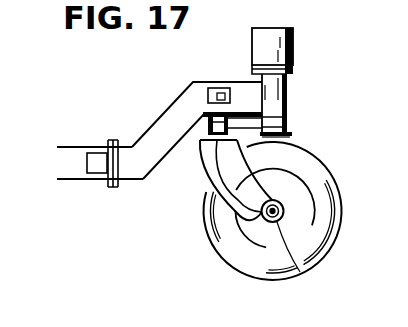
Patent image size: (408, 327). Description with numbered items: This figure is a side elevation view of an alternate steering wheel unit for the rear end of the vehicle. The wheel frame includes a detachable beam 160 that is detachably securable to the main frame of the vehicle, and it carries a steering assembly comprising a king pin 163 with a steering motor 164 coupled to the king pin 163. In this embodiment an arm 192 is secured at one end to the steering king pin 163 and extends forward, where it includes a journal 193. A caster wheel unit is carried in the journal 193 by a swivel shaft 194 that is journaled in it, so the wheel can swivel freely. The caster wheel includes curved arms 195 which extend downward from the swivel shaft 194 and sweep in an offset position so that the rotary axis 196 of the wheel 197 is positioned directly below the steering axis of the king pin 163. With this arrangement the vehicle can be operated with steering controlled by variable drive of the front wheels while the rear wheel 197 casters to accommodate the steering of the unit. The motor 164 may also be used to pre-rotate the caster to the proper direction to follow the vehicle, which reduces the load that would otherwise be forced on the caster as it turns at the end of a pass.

The detachable beam 160 is at (160, 132).
The journal 193 is at (203, 117).
The steering motor 164 is at (285, 30).
The king pin 163 is at (287, 86).
The arm 192 is at (285, 130).
The swivel shaft 194 is at (212, 178).
The curved arms 195 is at (236, 198).
The rotary axis 196 is at (303, 277).
The wheel 197 is at (328, 170).